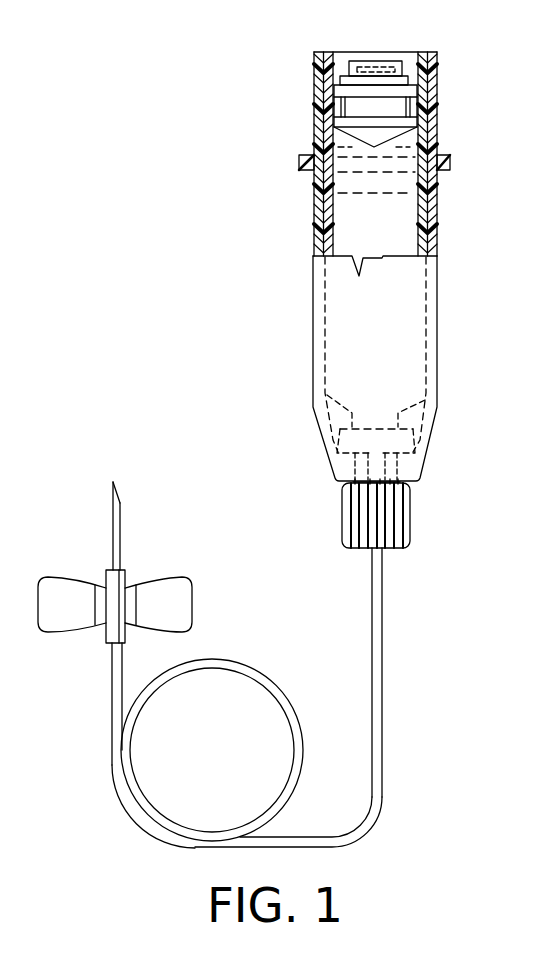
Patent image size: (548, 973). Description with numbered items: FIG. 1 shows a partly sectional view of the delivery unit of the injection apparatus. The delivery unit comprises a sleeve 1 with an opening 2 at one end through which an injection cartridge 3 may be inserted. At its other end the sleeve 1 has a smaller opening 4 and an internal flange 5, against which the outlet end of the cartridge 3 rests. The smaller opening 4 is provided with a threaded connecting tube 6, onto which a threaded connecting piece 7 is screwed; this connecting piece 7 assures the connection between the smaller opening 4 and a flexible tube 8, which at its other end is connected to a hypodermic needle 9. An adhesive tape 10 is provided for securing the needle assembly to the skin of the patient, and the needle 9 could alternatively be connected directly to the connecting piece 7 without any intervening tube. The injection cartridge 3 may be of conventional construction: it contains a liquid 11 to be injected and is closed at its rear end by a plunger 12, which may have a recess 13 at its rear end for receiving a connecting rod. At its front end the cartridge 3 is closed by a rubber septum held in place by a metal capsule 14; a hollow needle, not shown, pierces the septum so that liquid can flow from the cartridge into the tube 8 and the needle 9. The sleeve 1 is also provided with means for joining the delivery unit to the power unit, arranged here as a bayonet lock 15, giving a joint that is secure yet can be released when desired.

The sleeve 1 is at (310, 231).
The opening 2 is at (340, 52).
The injection cartridge 3 is at (411, 60).
The smaller opening 4 is at (356, 463).
The internal flange 5 is at (335, 462).
The threaded connecting tube 6 is at (400, 483).
The threaded connecting piece 7 is at (412, 536).
The flexible tube 8 is at (372, 818).
The hypodermic needle 9 is at (123, 536).
The adhesive tape 10 is at (192, 614).
The liquid 11 is at (390, 240).
The plunger 12 is at (352, 106).
The recess 13 is at (372, 60).
The metal capsule 14 is at (418, 431).
The bayonet lock 15 is at (452, 157).